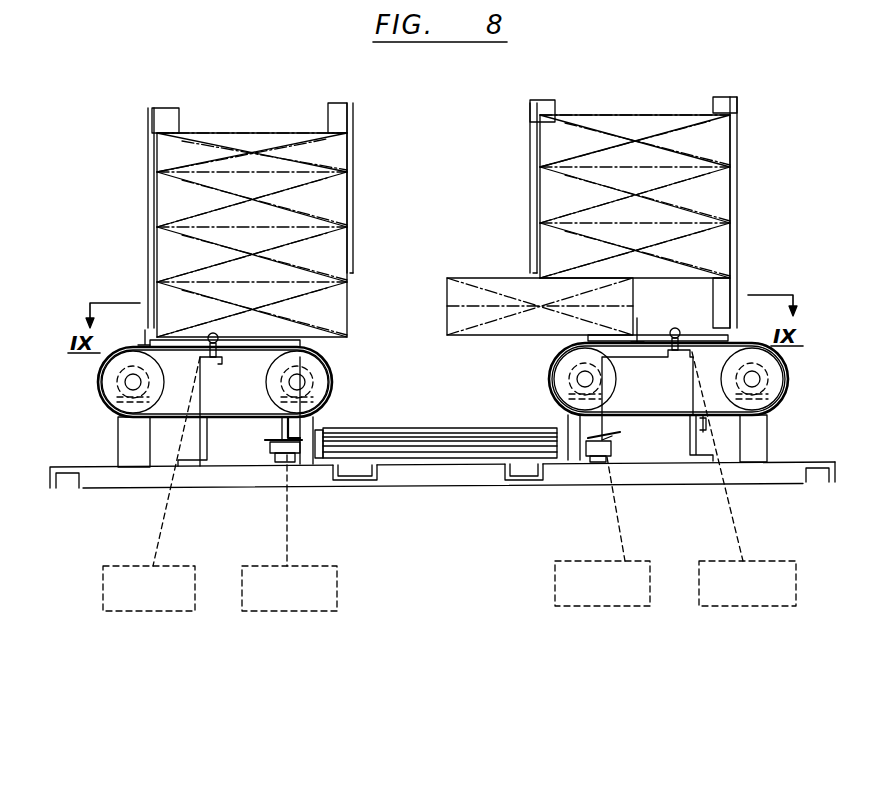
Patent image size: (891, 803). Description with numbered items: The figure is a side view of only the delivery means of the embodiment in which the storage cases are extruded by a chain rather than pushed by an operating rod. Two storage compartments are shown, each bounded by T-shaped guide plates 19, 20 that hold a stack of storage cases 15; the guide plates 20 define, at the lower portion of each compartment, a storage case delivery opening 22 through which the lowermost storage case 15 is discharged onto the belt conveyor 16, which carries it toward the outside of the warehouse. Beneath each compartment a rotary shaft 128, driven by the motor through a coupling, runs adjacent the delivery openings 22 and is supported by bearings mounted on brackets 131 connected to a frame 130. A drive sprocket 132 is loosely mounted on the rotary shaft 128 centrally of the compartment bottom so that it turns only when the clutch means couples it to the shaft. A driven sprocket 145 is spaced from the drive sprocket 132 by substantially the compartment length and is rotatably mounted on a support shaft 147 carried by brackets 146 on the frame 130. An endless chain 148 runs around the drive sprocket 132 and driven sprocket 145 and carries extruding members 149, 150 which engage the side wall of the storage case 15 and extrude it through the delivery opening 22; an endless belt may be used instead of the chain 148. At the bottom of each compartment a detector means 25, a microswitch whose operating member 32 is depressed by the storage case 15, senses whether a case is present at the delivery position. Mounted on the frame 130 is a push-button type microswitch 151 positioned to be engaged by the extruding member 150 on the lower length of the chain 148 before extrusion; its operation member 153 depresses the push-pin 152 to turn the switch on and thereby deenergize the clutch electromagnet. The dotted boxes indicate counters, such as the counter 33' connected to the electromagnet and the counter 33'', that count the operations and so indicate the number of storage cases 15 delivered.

The storage case 15 is at (340, 214).
The belt conveyor 16 is at (440, 460).
The guide plate 19 is at (147, 120).
The guide plate 20 is at (354, 120).
The storage case delivery opening 22 is at (354, 274).
The detector means 25 is at (220, 362).
The operating member 32 is at (209, 334).
The counter 33' is at (454, 497).
The counter 33'' is at (449, 548).
The rotary shaft 128 is at (305, 382).
The frame 130 is at (140, 484).
The bracket 131 is at (320, 414).
The drive sprocket 132 is at (315, 362).
The driven sprocket 145 is at (112, 392).
The bracket 146 is at (125, 438).
The support shaft 147 is at (127, 380).
The endless chain 148 is at (204, 470).
The extruding member 149 is at (145, 340).
The extruding member 150 is at (278, 434).
The push-button type microswitch 151 is at (292, 455).
The push-pin 152 is at (285, 465).
The operation member 153 is at (302, 432).